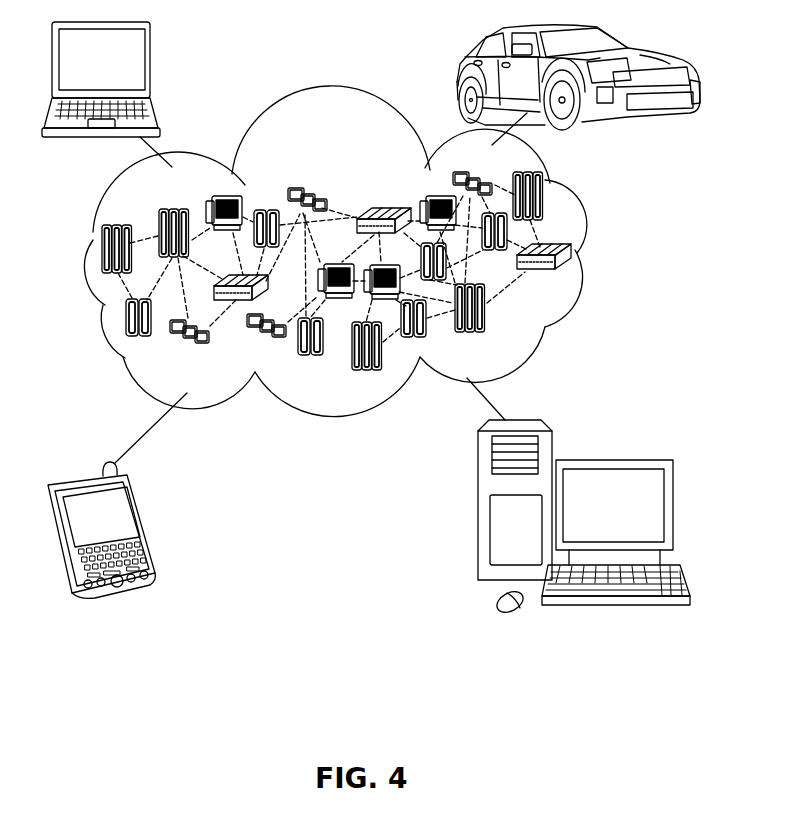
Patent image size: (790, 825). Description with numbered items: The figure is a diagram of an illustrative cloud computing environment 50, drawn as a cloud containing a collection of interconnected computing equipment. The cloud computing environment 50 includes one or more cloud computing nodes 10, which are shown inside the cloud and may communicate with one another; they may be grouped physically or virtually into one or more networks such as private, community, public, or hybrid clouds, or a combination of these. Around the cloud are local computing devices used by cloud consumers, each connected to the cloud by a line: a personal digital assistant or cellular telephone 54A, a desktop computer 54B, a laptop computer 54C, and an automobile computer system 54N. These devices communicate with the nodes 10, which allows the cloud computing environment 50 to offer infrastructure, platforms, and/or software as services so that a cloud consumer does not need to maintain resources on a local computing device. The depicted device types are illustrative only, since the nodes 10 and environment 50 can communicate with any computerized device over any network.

The cloud computing nodes 10 is at (373, 271).
The cloud computing environment 50 is at (618, 258).
The personal digital assistant (PDA) or cellular telephone 54A is at (143, 528).
The desktop computer 54B is at (612, 460).
The laptop computer 54C is at (150, 64).
The automobile computer system 54N is at (460, 75).